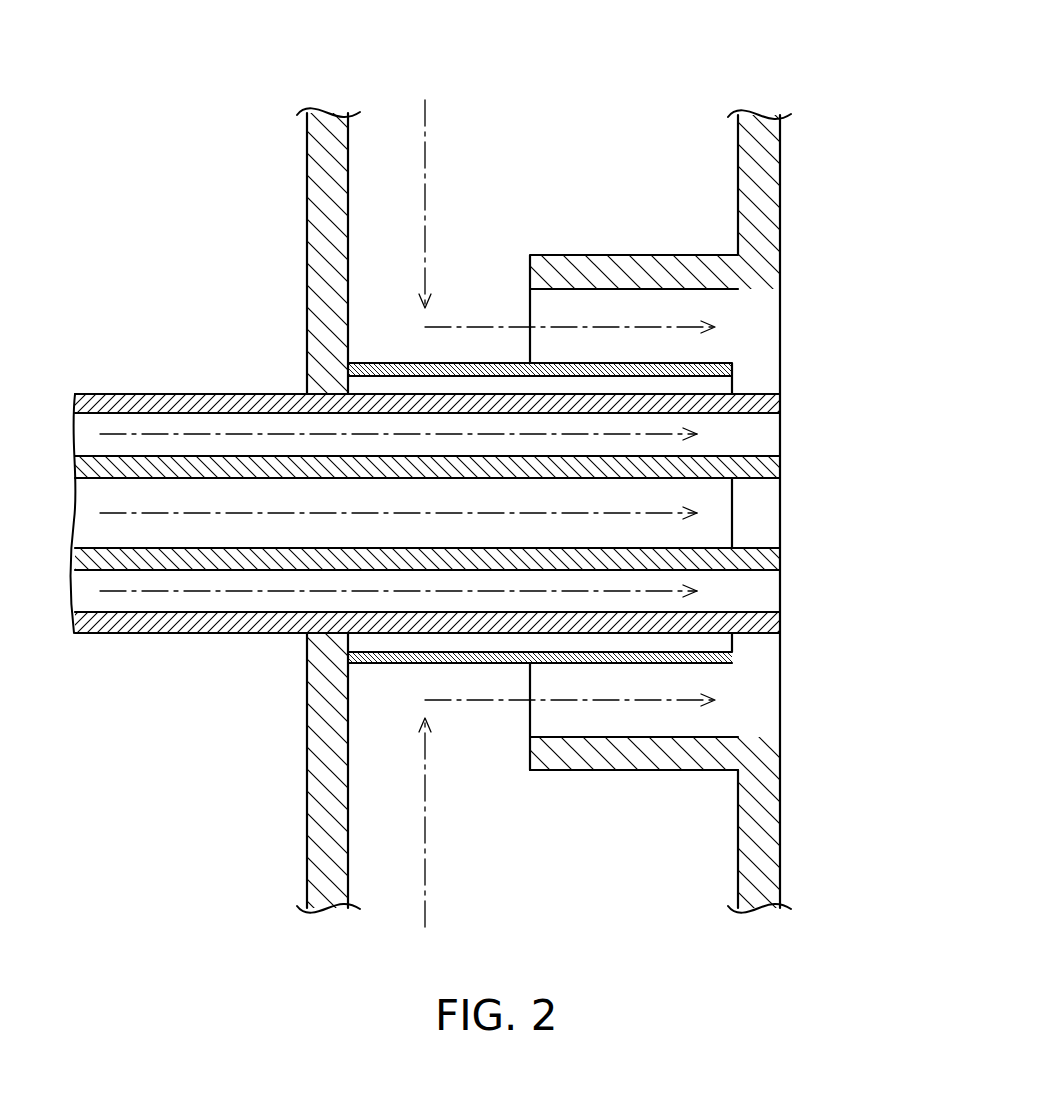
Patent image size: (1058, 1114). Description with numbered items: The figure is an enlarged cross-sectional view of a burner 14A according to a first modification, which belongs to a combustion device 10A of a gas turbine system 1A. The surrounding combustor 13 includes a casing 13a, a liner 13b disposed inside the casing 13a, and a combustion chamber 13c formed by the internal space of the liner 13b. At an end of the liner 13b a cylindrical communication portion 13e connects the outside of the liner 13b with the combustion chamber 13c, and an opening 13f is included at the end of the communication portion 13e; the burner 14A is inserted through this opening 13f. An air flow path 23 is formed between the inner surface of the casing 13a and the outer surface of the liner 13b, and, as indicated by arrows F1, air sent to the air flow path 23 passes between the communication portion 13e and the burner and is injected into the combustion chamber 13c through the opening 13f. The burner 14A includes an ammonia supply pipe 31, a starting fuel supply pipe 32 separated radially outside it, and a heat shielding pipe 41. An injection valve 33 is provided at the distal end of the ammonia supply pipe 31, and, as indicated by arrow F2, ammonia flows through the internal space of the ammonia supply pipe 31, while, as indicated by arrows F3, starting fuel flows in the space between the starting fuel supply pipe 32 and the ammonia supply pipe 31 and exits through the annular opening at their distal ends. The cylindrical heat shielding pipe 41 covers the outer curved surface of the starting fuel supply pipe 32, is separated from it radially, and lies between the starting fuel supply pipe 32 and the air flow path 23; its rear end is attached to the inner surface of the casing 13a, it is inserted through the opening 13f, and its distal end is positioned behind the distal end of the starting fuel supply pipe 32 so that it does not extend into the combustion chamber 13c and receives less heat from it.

The gas turbine system 1A is at (97, 62).
The combustion device 10A is at (159, 124).
The combustor 13 is at (307, 872).
The casing 13a is at (307, 810).
The liner 13b is at (659, 770).
The combustion chamber 13c is at (937, 453).
The communication portion 13e is at (592, 770).
The opening 13f is at (545, 740).
The burner 14A is at (209, 713).
The air flow path 23 is at (541, 122).
The ammonia supply pipe 31 is at (252, 570).
The starting fuel supply pipe 32 is at (188, 633).
The injection valve 33 is at (780, 513).
The heat shielding pipe 41 is at (690, 363).
The air flow arrows F1 is at (425, 196).
The ammonia flow arrow F2 is at (257, 513).
The starting fuel flow arrows F3 is at (166, 591).